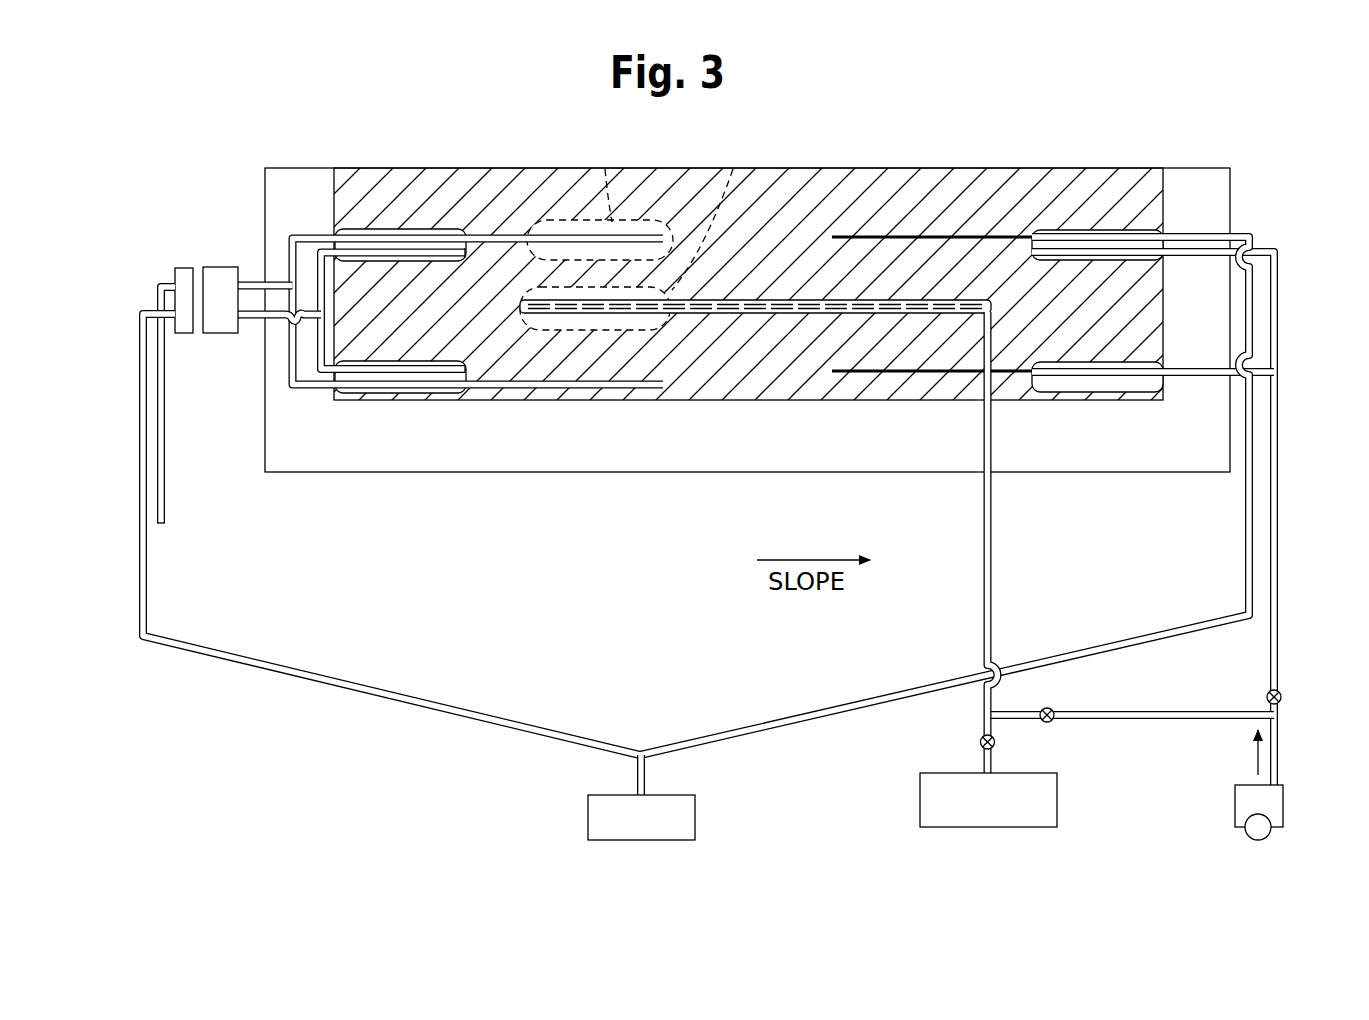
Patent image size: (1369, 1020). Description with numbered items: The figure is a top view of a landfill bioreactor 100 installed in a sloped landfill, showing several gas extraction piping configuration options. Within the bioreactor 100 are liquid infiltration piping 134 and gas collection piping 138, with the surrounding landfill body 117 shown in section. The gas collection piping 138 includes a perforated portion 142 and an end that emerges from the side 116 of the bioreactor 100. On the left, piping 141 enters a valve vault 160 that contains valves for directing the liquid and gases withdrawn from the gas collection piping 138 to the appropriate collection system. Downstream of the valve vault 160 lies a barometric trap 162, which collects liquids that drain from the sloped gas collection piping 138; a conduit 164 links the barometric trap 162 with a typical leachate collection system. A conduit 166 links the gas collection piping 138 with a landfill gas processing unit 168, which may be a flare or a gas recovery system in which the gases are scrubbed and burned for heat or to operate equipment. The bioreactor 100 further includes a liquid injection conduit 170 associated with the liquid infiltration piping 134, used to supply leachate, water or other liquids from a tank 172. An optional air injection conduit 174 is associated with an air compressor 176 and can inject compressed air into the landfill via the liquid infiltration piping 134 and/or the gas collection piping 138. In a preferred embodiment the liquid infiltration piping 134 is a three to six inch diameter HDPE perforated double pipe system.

The bioreactor 100 is at (747, 349).
The side 116 is at (1050, 472).
The heated body 117 is at (555, 353).
The liquid infiltration piping 134 is at (715, 317).
The gas collection piping 138 is at (363, 226).
The piping 141 is at (253, 282).
The perforated portion 142 is at (623, 228).
The valve vault 160 is at (227, 267).
The barometric trap 162 is at (180, 268).
The conduit 164 is at (163, 525).
The conduit 166 is at (247, 664).
The landfill gas processing unit 168 is at (588, 820).
The liquid injection conduit 170 is at (983, 625).
The tank 172 is at (1020, 827).
The air injection conduit 174 is at (1197, 363).
The air compressor 176 is at (1231, 807).